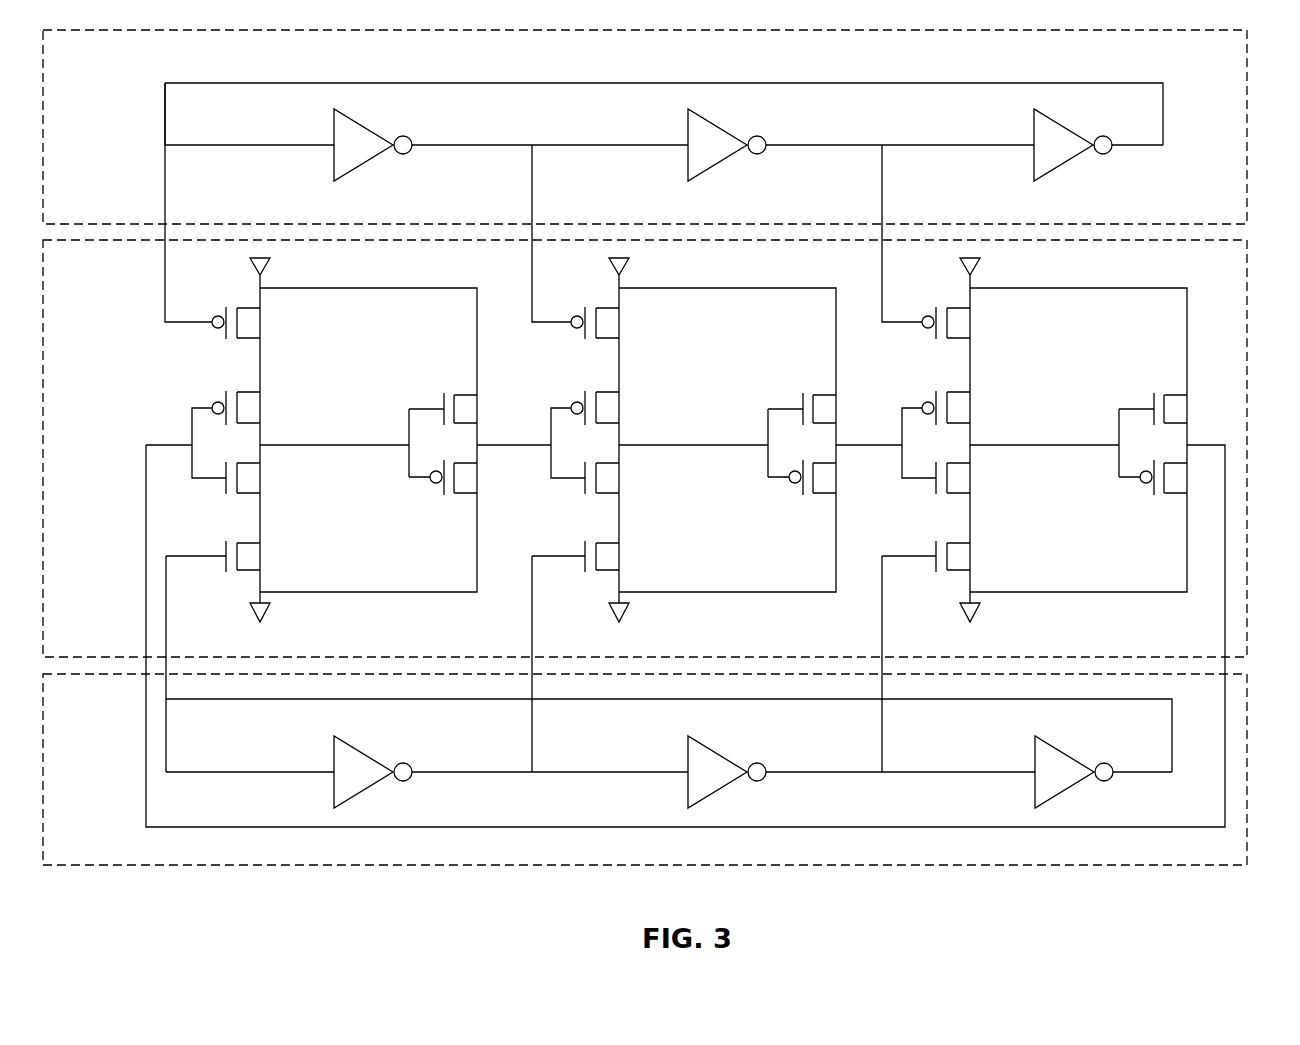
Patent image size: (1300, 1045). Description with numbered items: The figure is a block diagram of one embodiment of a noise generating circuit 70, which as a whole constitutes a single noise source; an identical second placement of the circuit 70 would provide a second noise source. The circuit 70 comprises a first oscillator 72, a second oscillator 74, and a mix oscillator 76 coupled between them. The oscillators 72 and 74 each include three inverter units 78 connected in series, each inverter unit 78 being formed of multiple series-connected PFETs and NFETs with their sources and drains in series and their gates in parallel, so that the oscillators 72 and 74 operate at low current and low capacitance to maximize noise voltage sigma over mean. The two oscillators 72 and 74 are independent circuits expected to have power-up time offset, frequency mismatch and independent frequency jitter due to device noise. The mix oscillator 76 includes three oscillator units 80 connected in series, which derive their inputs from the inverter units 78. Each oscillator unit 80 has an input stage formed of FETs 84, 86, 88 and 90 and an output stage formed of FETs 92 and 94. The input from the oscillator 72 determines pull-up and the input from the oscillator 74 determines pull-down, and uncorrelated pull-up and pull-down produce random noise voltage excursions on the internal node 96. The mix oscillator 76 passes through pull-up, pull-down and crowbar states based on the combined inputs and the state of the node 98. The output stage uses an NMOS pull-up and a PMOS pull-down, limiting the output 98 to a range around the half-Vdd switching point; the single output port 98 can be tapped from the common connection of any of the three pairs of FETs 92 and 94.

The noise generating circuit 70 is at (1293, 128).
The first oscillator 72 is at (122, 117).
The second oscillator 74 is at (122, 758).
The mix oscillator 76 is at (122, 434).
The inverter unit 78 is at (367, 163).
The oscillator unit 80 is at (360, 343).
The FET 84 is at (250, 305).
The FET 86 is at (250, 392).
The FET 88 is at (250, 495).
The FET 90 is at (250, 573).
The FET 92 is at (467, 390).
The FET 94 is at (467, 495).
The internal node 96 is at (363, 447).
The output 98 is at (518, 445).